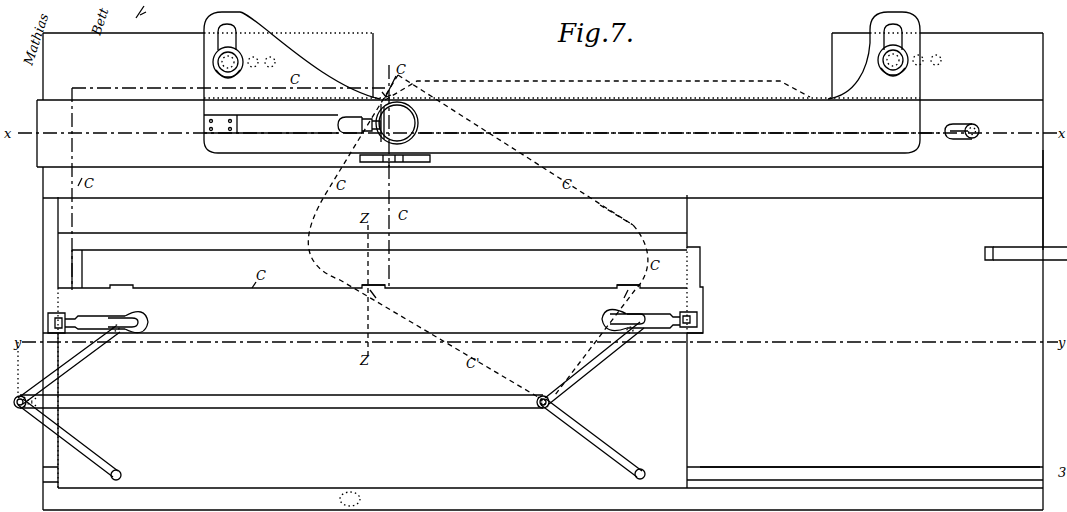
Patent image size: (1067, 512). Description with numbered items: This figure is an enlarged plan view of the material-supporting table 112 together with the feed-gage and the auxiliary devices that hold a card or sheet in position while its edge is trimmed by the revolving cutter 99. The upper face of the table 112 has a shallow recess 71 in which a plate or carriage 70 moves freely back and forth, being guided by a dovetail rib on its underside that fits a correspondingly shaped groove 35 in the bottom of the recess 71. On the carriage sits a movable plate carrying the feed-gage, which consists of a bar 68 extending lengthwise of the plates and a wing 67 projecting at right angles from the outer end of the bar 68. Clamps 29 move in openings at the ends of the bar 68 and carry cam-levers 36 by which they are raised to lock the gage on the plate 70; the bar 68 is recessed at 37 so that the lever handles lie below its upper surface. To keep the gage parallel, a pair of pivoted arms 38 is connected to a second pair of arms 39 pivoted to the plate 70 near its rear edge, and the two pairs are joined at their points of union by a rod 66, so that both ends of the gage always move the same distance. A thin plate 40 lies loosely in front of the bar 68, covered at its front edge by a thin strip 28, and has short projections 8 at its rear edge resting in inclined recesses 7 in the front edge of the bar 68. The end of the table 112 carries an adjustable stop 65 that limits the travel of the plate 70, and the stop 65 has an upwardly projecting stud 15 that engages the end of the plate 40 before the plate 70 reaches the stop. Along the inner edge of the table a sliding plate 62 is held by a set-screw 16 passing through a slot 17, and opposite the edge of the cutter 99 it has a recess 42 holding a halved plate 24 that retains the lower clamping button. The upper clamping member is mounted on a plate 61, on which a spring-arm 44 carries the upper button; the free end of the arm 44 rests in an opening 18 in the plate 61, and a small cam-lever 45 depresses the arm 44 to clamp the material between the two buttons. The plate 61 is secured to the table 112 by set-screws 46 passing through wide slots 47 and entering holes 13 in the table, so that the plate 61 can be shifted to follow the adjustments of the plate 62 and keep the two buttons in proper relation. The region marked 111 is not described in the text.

The slots 47 is at (228, 24).
The set-screws 46 is at (225, 62).
The holes 13 is at (253, 57).
The spring-arm 44 is at (271, 124).
The cam-lever 45 is at (352, 117).
The opening 18 is at (418, 119).
The halved plate 24 is at (376, 158).
The recess 42 is at (397, 162).
The sliding plate 62 is at (936, 157).
The plate 61 is at (680, 126).
The cutter 99 is at (597, 83).
The slot 17 is at (958, 124).
The set-screw 16 is at (977, 126).
The table 112 is at (543, 187).
The frame side 111 is at (1055, 200).
The thin strip 28 is at (609, 236).
The thin plate 40 is at (380, 264).
The wing 67 is at (78, 278).
The bar 68 is at (373, 309).
The short projections 8 is at (372, 287).
The inclined recesses 7 is at (501, 298).
The clamps 29 is at (48, 323).
The cam-levers 36 is at (99, 318).
The recess 37 is at (148, 323).
The pivoted arms 38 is at (85, 354).
The pivoted arms 39 is at (104, 456).
The rod 66 is at (378, 395).
The plate or carriage 70 is at (365, 419).
The recess 71 is at (865, 394).
The groove 35 is at (910, 468).
The stud 15 is at (985, 254).
The stop 65 is at (1032, 262).